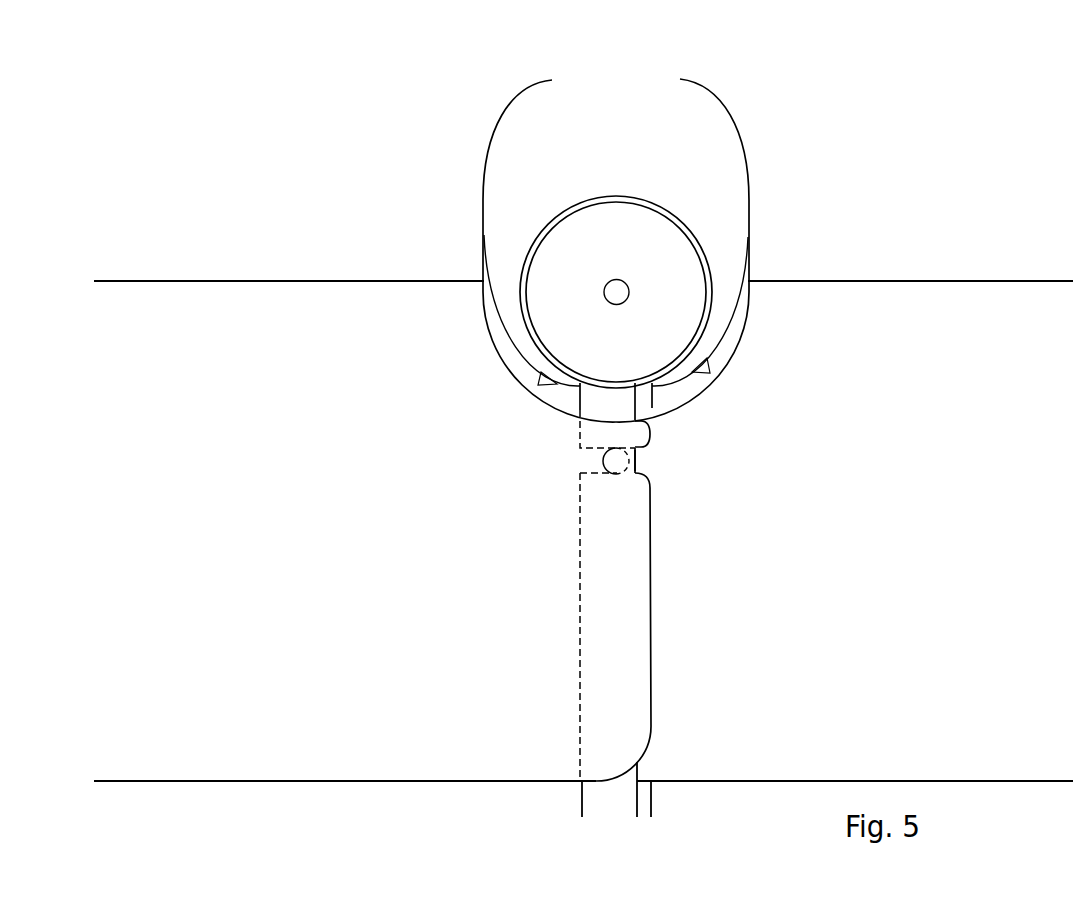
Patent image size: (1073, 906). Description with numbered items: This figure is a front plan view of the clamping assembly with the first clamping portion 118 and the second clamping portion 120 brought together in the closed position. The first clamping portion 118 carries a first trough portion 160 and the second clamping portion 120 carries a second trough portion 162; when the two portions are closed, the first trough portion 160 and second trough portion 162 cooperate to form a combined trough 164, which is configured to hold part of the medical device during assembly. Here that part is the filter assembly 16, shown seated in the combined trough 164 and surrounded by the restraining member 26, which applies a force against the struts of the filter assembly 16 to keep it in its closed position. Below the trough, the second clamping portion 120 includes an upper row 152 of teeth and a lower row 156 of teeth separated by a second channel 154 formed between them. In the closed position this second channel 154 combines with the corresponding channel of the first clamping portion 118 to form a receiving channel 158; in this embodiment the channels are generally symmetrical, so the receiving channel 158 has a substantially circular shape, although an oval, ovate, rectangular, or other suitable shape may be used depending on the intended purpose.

The filter assembly 16 is at (626, 269).
The restraining member 26 is at (616, 196).
The first clamping portion 118 is at (842, 605).
The second clamping portion 120 is at (443, 605).
The upper row of teeth 152 is at (637, 437).
The second channel 154 is at (643, 464).
The lower row of teeth 156 is at (637, 494).
The receiving channel 158 is at (616, 470).
The first trough portion 160 is at (700, 82).
The second trough portion 162 is at (532, 82).
The combined trough 164 is at (677, 65).